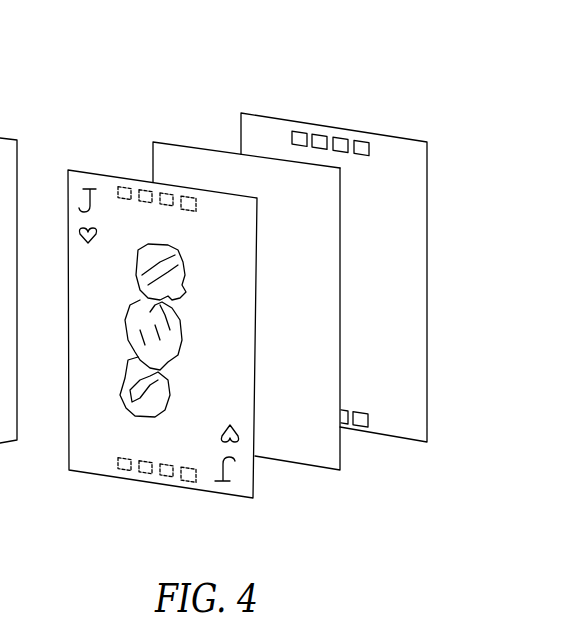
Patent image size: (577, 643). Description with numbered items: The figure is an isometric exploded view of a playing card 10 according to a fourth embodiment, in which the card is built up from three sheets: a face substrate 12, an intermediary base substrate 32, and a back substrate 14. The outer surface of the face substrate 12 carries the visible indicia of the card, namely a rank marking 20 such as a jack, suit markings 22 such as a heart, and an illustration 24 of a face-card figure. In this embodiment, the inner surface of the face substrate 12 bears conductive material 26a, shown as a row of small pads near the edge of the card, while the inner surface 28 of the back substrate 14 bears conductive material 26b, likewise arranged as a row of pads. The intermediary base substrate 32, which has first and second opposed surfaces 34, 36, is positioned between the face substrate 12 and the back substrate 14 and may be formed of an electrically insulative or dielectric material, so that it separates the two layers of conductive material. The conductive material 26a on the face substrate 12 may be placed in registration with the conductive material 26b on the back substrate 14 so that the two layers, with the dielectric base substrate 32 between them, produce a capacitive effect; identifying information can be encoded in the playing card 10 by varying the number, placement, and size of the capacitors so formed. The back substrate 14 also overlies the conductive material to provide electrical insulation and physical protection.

The playing card 10 is at (300, 556).
The face substrate 12 is at (67, 441).
The back substrate 14 is at (17, 190).
The rank marking 20 is at (72, 199).
The suit markings 22 is at (72, 241).
The illustrations 24 is at (98, 313).
The conductive material 26a is at (98, 176).
The conductive material 26b is at (318, 118).
The inner surface 28 is at (393, 274).
The intermediary base substrate 32 is at (168, 160).
The first surface 34 is at (308, 296).
The second surface 36 is at (316, 418).